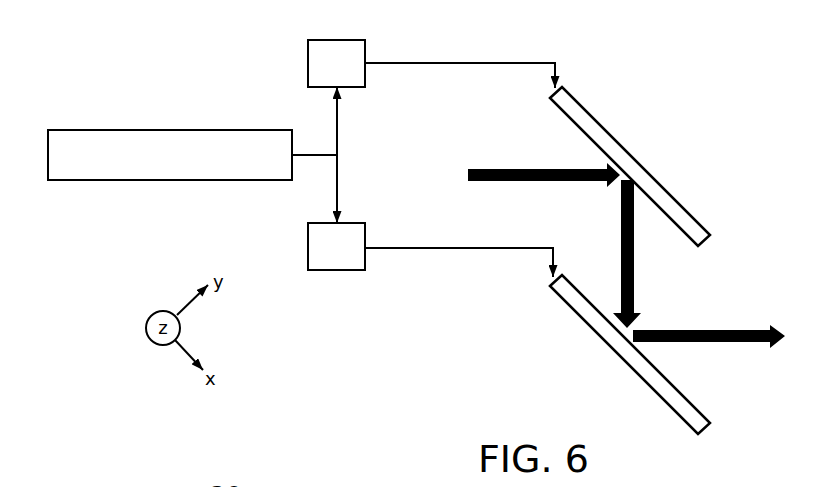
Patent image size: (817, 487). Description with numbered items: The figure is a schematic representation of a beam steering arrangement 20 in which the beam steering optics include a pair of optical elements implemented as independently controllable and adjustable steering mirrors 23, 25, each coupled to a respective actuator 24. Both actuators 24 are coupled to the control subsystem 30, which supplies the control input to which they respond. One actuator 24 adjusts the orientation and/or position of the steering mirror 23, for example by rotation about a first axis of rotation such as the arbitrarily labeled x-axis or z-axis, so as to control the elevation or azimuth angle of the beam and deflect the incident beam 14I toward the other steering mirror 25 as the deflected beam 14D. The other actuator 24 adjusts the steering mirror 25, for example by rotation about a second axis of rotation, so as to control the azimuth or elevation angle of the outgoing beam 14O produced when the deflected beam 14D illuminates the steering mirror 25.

The beam steering arrangement 20 is at (663, 110).
The steering mirror 23 is at (707, 242).
The actuator 24 is at (423, 158).
The steering mirror 25 is at (707, 428).
The control subsystem 30 is at (163, 180).
The incident beam 14I is at (488, 168).
The deflected beam 14D is at (618, 240).
The outgoing beam 14O is at (692, 333).